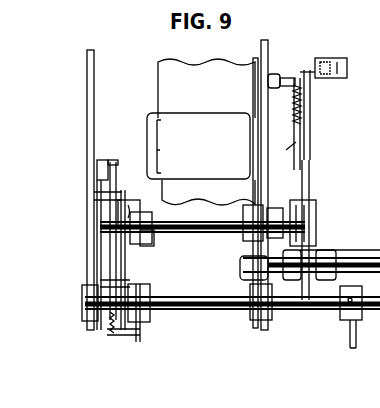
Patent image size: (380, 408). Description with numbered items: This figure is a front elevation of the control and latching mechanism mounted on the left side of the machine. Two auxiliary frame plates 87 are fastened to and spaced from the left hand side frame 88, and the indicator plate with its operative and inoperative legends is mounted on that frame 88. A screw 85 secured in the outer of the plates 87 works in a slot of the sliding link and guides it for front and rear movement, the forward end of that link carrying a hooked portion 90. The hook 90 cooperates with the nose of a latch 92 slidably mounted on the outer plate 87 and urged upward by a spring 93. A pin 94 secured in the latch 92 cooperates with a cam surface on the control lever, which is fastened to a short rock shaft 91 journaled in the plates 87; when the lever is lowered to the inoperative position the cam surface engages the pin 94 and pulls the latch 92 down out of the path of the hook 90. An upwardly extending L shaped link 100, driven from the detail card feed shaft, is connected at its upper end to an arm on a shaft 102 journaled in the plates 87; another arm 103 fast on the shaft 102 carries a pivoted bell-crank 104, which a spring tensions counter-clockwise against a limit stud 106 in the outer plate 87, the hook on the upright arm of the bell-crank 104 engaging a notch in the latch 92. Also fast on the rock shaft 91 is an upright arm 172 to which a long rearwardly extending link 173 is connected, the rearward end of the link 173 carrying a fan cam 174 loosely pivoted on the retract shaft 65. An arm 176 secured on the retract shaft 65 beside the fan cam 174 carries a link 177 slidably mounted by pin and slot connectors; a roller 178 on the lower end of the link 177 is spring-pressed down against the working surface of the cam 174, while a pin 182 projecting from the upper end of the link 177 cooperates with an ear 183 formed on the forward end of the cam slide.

The retract shaft 65 is at (346, 262).
The screw 85 is at (100, 170).
The auxiliary frame plates 87 is at (93, 68).
The left hand side frame 88 is at (186, 113).
The hooked portion 90 is at (112, 168).
The rock shaft 91 is at (190, 234).
The latch 92 is at (108, 193).
The spring 93 is at (128, 200).
The pin 94 is at (133, 236).
The L shaped link 100 is at (351, 342).
The shaft 102 is at (212, 312).
The arm 103 is at (141, 332).
The bell-crank 104 is at (114, 284).
The limit stud 106 is at (108, 327).
The upright arm 172 is at (310, 118).
The link 173 is at (310, 148).
The fan cam 174 is at (310, 194).
The arm 176 is at (310, 236).
The link 177 is at (302, 72).
The roller 178 is at (300, 166).
The pin 182 is at (318, 58).
The ear 183 is at (336, 78).